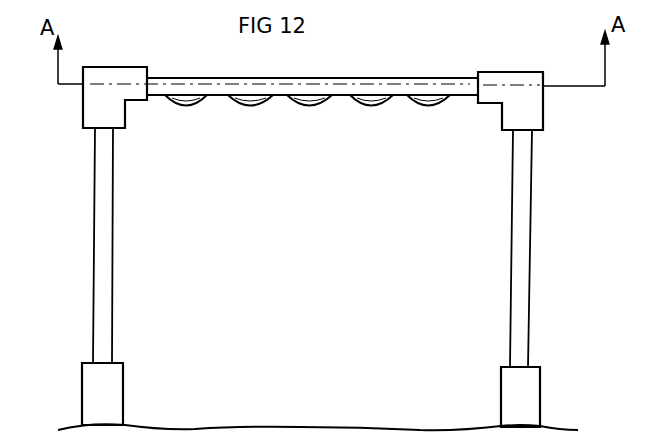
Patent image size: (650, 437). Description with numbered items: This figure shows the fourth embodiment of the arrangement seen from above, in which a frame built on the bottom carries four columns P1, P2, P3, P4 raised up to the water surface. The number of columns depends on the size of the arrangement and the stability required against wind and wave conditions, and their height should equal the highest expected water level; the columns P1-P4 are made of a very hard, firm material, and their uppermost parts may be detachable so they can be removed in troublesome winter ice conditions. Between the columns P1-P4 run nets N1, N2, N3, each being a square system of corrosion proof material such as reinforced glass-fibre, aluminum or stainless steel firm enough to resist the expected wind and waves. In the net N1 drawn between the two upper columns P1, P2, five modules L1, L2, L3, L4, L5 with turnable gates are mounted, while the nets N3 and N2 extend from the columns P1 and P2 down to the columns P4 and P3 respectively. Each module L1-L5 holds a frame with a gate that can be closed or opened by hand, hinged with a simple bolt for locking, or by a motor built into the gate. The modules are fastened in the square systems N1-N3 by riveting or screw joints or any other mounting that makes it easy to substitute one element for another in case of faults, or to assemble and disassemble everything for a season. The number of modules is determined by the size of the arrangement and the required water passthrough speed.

The column P1 is at (83, 102).
The column P2 is at (543, 116).
The column P3 is at (540, 400).
The column P4 is at (82, 387).
The net N1 is at (312, 64).
The net N2 is at (528, 262).
The net N3 is at (93, 240).
The module L1 is at (186, 129).
The module L2 is at (250, 129).
The module L3 is at (309, 129).
The module L4 is at (371, 129).
The module L5 is at (428, 129).